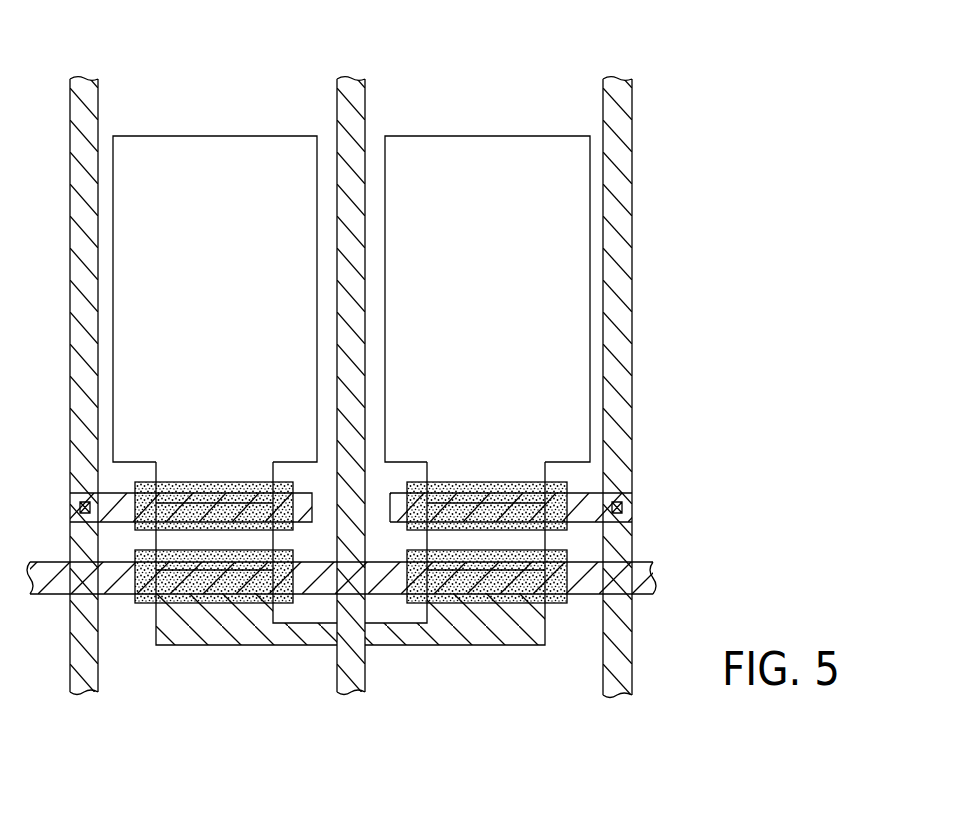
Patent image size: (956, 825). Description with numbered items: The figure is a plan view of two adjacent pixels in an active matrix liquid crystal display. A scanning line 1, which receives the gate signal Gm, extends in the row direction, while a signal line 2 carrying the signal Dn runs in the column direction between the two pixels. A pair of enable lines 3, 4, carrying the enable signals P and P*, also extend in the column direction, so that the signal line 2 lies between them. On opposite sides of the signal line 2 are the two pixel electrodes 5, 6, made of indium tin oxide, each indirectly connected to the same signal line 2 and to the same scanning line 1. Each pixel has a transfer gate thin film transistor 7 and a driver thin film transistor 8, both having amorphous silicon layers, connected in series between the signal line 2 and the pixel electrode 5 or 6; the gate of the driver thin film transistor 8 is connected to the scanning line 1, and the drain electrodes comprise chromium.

The scanning line 1 is at (633, 595).
The signal line 2 is at (355, 127).
The enable line 3 is at (78, 243).
The enable line 4 is at (615, 323).
The pixel electrode 5 is at (217, 163).
The pixel electrode 6 is at (493, 163).
The transfer gate thin film transistor 7 is at (110, 540).
The driver thin film transistor 8 is at (230, 665).